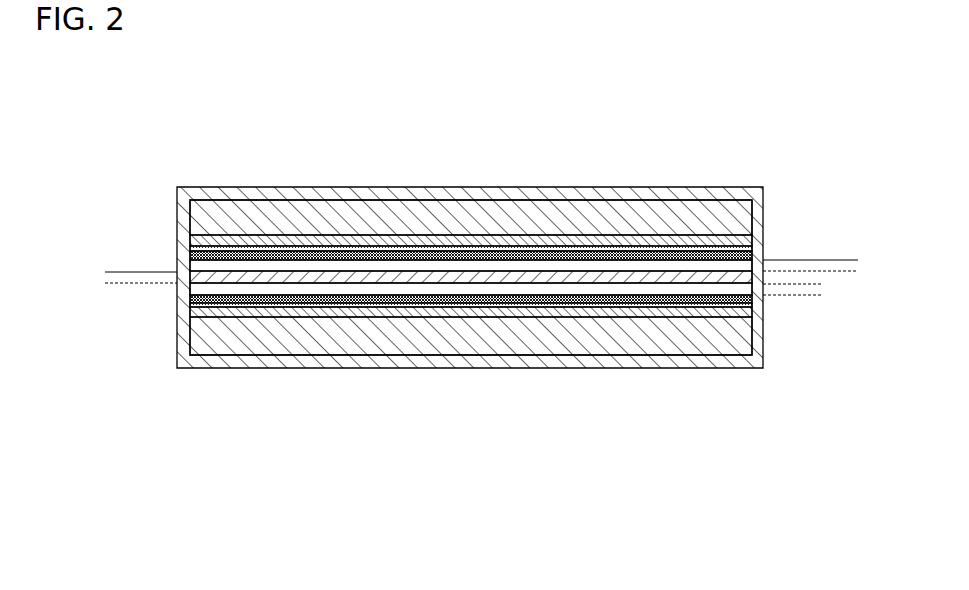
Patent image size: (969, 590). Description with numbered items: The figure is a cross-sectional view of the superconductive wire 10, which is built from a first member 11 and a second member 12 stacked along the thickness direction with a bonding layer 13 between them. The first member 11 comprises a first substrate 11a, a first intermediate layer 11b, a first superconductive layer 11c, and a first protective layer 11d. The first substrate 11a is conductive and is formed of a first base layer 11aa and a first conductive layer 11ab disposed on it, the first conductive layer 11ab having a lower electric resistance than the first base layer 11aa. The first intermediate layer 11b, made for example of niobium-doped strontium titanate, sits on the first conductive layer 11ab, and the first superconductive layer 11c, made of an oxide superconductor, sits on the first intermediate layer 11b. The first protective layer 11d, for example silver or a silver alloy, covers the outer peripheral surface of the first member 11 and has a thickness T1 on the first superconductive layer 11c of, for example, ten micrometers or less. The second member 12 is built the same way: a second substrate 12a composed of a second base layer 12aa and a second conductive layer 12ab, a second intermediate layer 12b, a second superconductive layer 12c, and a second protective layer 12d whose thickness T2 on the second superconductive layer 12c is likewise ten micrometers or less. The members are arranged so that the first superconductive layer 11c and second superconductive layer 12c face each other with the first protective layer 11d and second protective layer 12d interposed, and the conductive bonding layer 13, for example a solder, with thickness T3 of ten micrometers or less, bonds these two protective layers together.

The superconductive wire 10 is at (282, 390).
The first member 11 is at (471, 382).
The first substrate 11a is at (471, 374).
The first base layer 11aa is at (692, 407).
The first conductive layer 11ab is at (640, 312).
The first intermediate layer 11b is at (600, 306).
The first superconductive layer 11c is at (532, 299).
The first protective layer 11d is at (470, 288).
The second member 12 is at (471, 176).
The second substrate 12a is at (471, 182).
The second base layer 12aa is at (352, 205).
The second conductive layer 12ab is at (343, 242).
The second intermediate layer 12b is at (393, 249).
The second superconductive layer 12c is at (467, 256).
The second protective layer 12d is at (342, 114).
The bonding layer 13 is at (657, 278).
The thickness of the first protective layer T1 is at (812, 270).
The thickness of the second protective layer T2 is at (850, 246).
The thickness of the bonding layer T3 is at (115, 258).